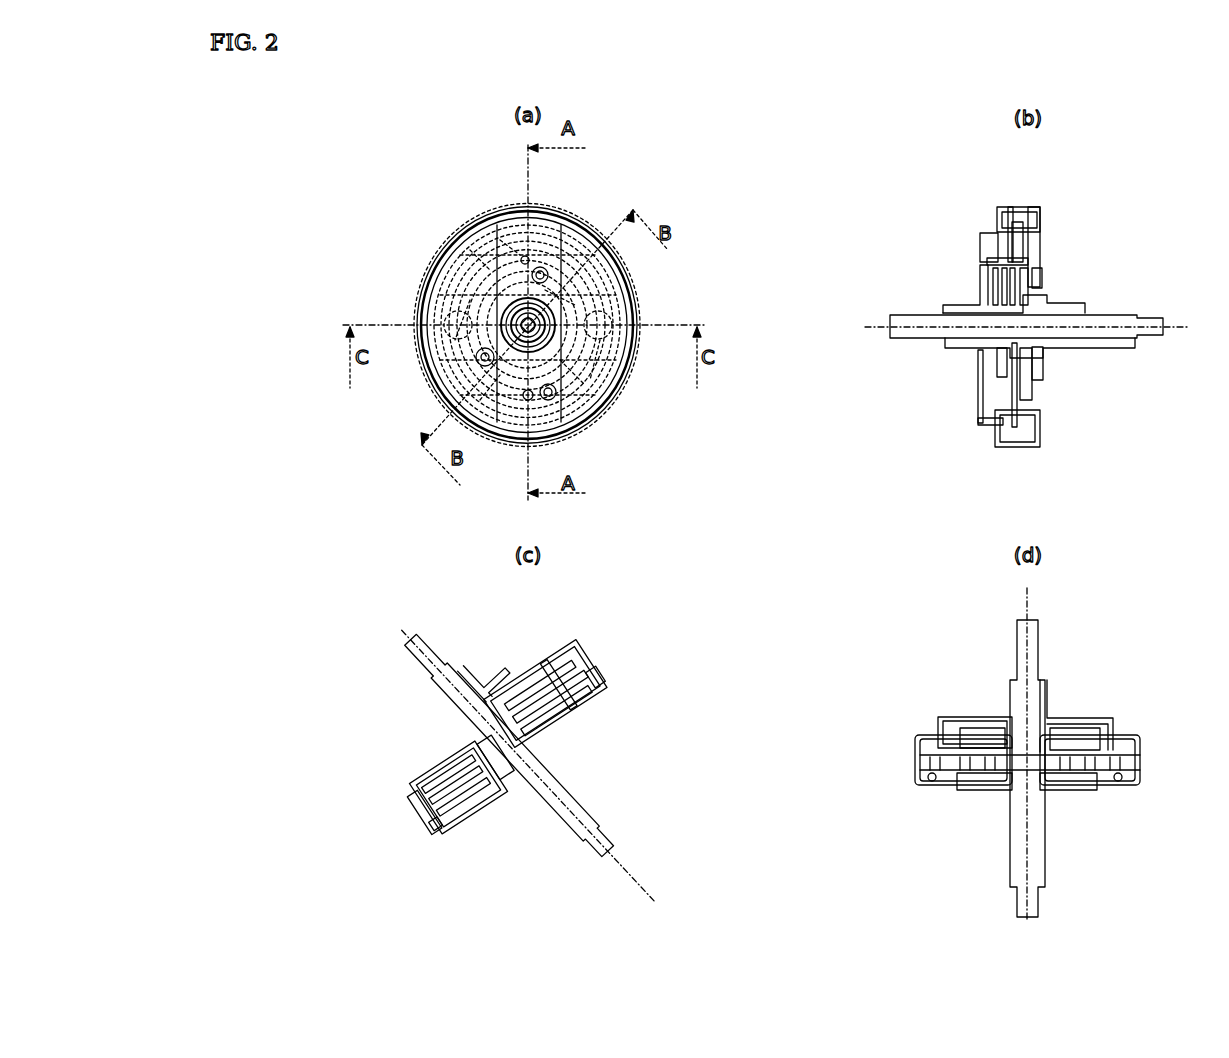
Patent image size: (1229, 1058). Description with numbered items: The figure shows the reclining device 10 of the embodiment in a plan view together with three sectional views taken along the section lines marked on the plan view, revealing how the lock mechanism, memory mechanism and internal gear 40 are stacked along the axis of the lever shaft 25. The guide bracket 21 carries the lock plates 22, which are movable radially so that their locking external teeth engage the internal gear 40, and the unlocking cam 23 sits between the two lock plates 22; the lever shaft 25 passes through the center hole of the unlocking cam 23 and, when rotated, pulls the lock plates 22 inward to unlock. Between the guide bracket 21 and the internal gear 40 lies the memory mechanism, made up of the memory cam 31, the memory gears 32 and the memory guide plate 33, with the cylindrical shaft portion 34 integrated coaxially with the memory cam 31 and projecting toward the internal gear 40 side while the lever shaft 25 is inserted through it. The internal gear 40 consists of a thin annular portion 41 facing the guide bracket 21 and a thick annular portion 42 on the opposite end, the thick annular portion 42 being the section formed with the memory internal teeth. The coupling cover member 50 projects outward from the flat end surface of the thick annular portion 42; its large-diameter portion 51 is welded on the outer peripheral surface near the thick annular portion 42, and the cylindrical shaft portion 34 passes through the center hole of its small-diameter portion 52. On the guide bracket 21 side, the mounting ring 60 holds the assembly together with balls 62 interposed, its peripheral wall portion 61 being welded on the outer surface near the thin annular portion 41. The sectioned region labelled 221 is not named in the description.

The reclining device 10 is at (608, 196).
The guide bracket 21 is at (1036, 386).
The lock plate 22 is at (1036, 250).
The magnet 221 is at (989, 258).
The unlocking cam 23 is at (1046, 300).
The lever shaft 25 is at (1110, 312).
The memory cam 31 is at (1031, 263).
The memory gear 32 is at (994, 240).
The memory guide plate 33 is at (984, 243).
The cylindrical shaft portion 34 is at (958, 305).
The internal gear 40 is at (1010, 446).
The thin annular portion 41 is at (1032, 210).
The thick annular portion 42 is at (1004, 206).
The coupling cover member 50 is at (640, 300).
The large-diameter portion 51 is at (999, 446).
The small-diameter portion 52 is at (991, 436).
The mounting ring 60 is at (1041, 440).
The peripheral wall portion 61 is at (1035, 448).
The ball 62 is at (1040, 425).